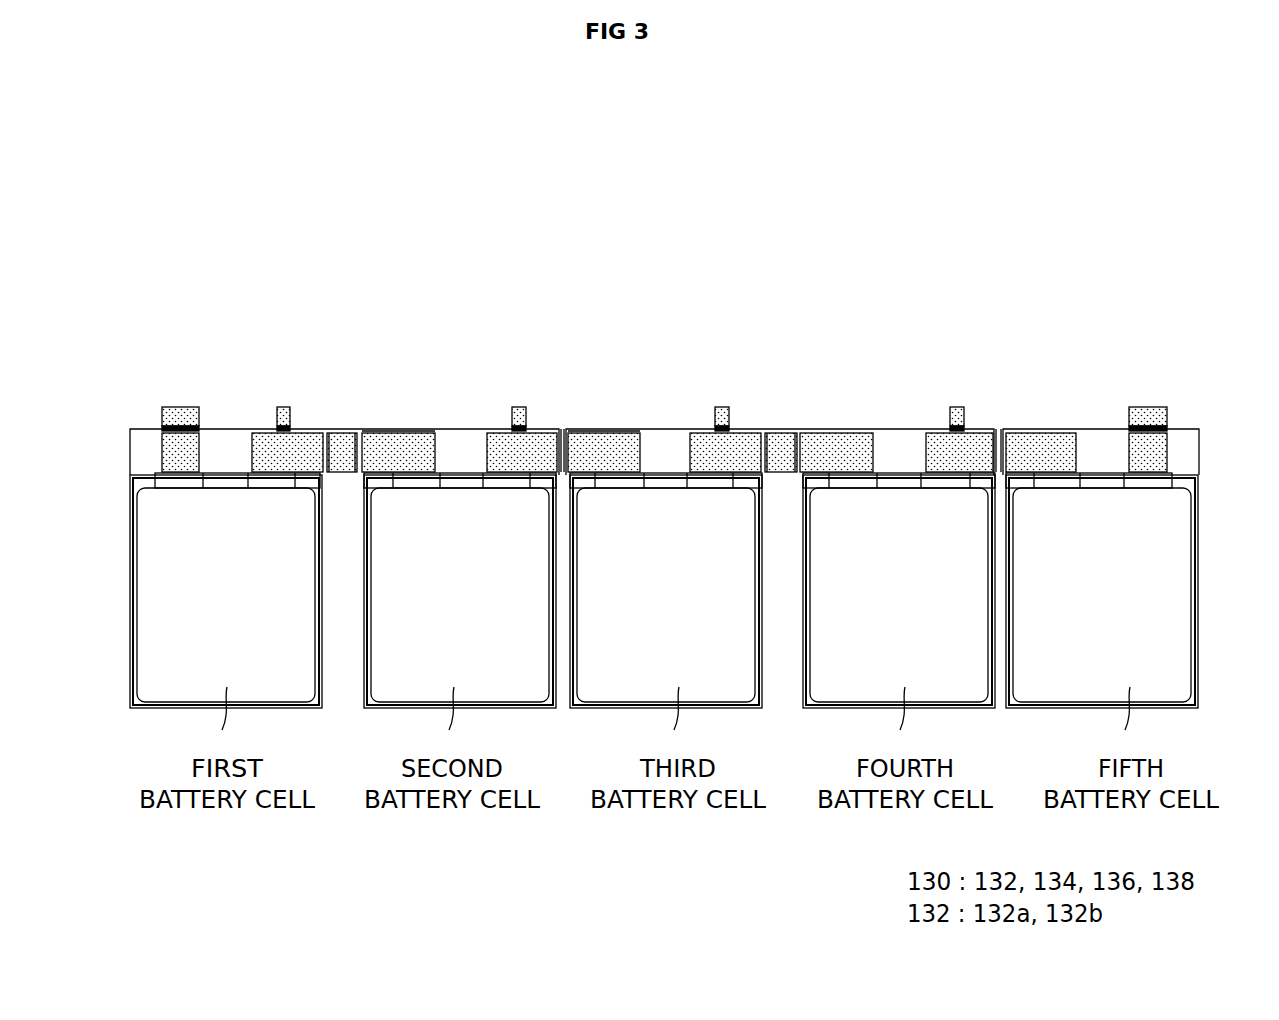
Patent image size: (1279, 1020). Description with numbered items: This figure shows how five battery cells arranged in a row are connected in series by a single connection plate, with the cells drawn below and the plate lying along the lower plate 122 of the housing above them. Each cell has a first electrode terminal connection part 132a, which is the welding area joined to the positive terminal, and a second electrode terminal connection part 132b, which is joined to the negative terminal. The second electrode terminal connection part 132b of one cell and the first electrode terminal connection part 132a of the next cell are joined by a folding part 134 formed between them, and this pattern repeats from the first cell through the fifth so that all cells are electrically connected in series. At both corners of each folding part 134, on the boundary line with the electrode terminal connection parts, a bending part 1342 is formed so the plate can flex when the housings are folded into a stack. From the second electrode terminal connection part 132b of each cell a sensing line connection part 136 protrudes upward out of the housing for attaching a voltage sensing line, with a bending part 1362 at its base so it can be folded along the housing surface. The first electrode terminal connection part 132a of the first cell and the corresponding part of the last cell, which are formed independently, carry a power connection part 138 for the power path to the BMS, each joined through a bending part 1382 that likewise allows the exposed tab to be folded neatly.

The lower plate 122 is at (130, 462).
The first electrode terminal connection part 132a is at (150, 437).
The second electrode terminal connection part 132b is at (262, 450).
The folding part 134 is at (342, 440).
The bending part 1342 is at (369, 447).
The sensing line connection part 136 is at (282, 407).
The bending part 1362 is at (293, 428).
The power connection part 138 is at (170, 412).
The bending part 1382 is at (185, 420).